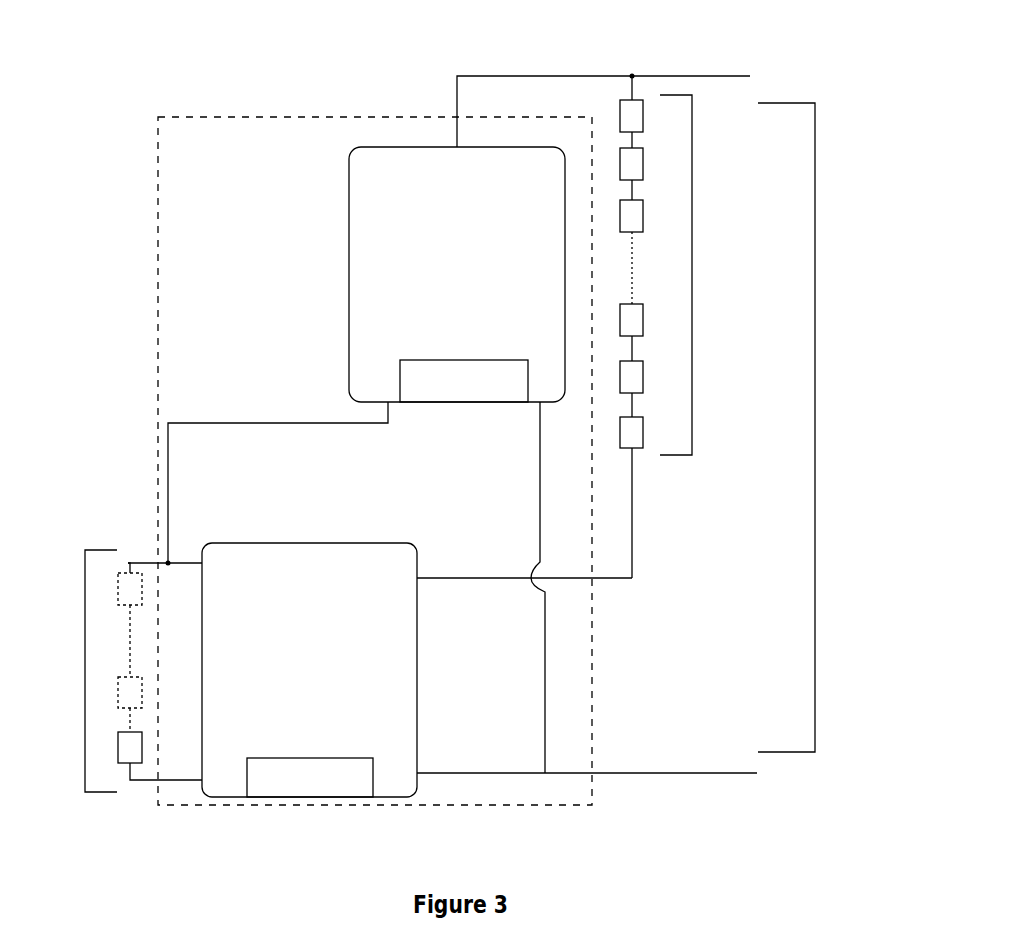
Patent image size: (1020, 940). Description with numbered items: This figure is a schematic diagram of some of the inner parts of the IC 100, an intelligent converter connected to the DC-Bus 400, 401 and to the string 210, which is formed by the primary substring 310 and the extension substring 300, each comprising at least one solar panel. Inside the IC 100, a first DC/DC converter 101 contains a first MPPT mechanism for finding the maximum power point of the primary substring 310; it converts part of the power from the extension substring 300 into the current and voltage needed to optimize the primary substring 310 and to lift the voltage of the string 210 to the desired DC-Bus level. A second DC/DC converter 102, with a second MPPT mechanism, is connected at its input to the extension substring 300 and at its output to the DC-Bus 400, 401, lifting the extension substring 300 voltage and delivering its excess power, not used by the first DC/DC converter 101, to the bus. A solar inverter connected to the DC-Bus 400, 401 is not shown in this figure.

The IC 100 is at (157, 208).
The first DC/DC converter 101 is at (327, 540).
The second DC/DC converter 102 is at (382, 142).
The string 210 is at (815, 425).
The extension substring 300 is at (85, 669).
The primary substring 310 is at (692, 279).
The DC-Bus 400 is at (511, 67).
The DC-Bus 401 is at (693, 775).